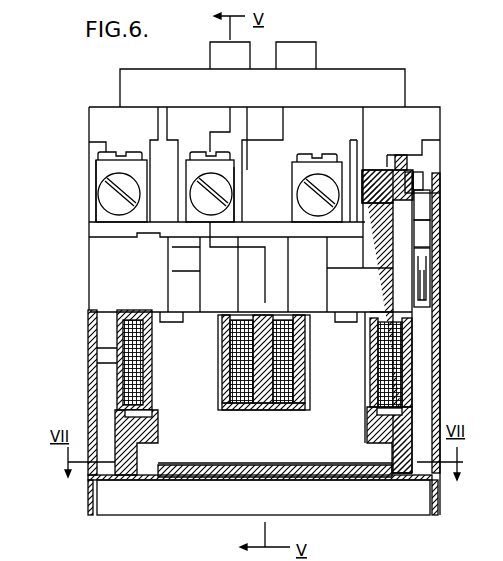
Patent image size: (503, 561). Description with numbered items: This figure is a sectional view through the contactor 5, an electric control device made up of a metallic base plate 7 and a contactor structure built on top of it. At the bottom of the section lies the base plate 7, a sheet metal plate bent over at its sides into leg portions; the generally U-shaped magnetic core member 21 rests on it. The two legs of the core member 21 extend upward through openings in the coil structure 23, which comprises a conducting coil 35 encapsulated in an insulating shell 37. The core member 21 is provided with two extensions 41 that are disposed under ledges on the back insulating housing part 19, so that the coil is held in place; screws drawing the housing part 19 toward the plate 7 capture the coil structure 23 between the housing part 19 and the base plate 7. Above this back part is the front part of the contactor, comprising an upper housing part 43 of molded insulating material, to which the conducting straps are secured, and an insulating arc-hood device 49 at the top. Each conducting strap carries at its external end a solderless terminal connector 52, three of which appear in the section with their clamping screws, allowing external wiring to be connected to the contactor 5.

The contactor 5 is at (72, 266).
The base plate 7 is at (87, 497).
The back insulating housing part 19 is at (438, 392).
The magnetic core member 21 is at (345, 455).
The coil structure 23 is at (88, 353).
The conducting coil 35 is at (140, 320).
The insulating shell 37 is at (128, 310).
The extensions 41 is at (153, 455).
The upper housing part 43 is at (438, 193).
The arc-hood device 49 is at (405, 85).
The solderless terminal connector 52 is at (128, 162).